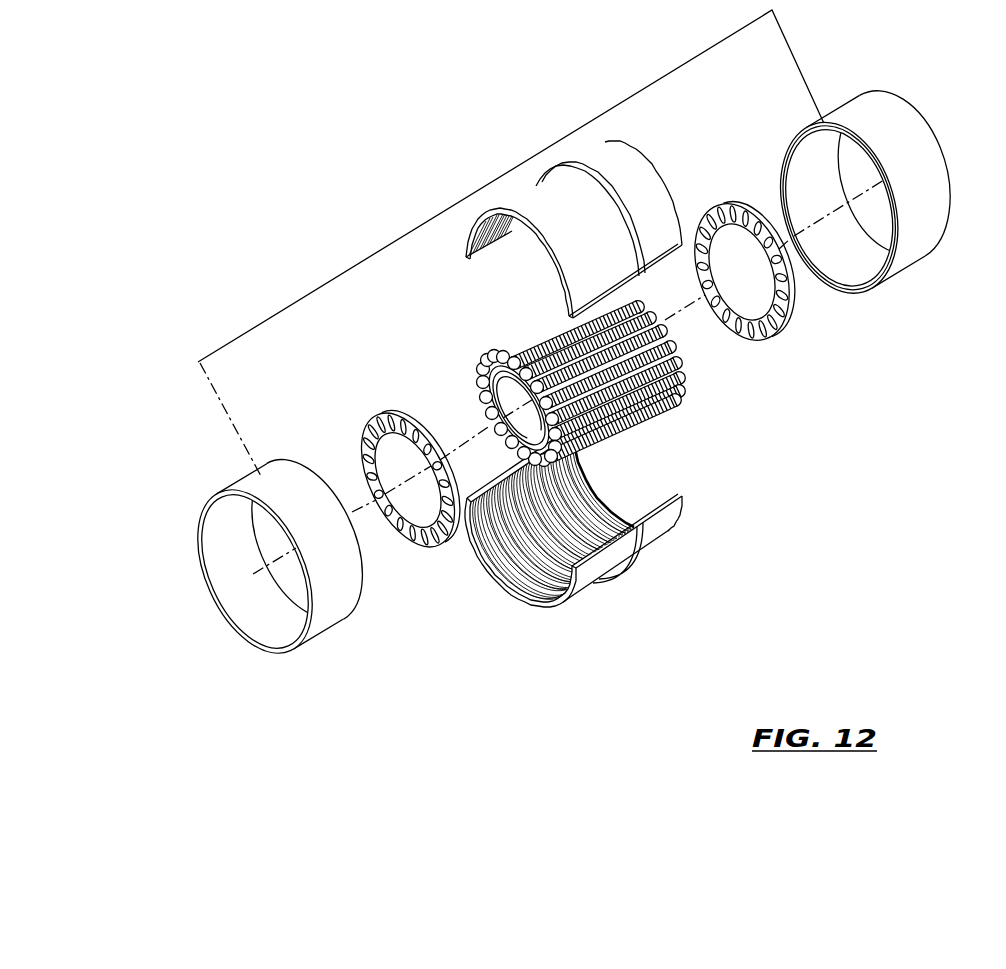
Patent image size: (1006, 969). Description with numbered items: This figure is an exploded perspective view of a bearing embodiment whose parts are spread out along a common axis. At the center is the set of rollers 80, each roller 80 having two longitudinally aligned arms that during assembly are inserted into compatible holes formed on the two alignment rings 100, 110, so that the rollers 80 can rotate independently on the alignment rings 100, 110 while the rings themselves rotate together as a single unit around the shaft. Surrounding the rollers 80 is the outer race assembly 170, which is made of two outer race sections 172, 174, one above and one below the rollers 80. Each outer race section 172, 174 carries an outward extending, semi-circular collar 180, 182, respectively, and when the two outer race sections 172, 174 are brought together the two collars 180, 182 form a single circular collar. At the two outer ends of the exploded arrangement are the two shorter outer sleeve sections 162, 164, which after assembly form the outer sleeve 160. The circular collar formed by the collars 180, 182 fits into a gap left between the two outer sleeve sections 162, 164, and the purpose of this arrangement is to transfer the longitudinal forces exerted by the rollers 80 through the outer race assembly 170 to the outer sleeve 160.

The outer sleeve 160 is at (492, 182).
The outer sleeve section 162 is at (216, 488).
The outer sleeve section 164 is at (923, 129).
The alignment ring 100 is at (372, 418).
The alignment ring 110 is at (726, 204).
The roller 80 is at (675, 388).
The outer race assembly 170 is at (580, 359).
The outer race section 172 is at (584, 212).
The outer race section 174 is at (613, 519).
The semi-circular collar 180 is at (590, 219).
The semi-circular collar 182 is at (628, 560).